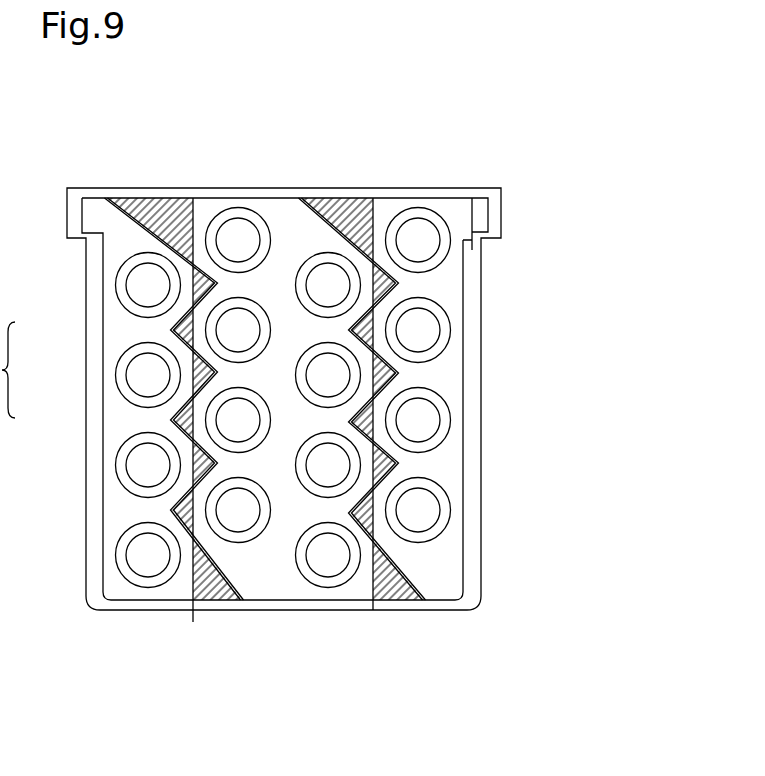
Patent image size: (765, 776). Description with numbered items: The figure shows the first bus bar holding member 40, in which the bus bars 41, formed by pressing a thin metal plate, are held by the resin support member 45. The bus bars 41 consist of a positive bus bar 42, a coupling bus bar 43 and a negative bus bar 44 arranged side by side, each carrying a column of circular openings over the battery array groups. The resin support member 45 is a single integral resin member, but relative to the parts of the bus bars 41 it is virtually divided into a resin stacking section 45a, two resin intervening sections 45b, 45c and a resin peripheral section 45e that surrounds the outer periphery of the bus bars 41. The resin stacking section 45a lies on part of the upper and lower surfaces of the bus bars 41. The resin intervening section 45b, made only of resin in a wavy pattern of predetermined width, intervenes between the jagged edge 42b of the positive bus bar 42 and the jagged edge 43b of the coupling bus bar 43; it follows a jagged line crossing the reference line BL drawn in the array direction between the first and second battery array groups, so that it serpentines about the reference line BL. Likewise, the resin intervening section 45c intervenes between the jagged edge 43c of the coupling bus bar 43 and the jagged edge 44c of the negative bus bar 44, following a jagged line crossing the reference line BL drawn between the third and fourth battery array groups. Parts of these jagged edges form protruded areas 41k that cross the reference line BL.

The first bus bar holding member 40 is at (567, 123).
The bus bars 41 is at (285, 399).
The protruded areas 41k is at (172, 510).
The positive bus bar 42 is at (118, 340).
The jagged edge 42b is at (196, 603).
The coupling bus bar 43 is at (172, 420).
The jagged edge 43b is at (250, 590).
The jagged edge 43c is at (417, 597).
The negative bus bar 44 is at (452, 378).
The jagged edge 44c is at (423, 580).
The resin support member 45 is at (483, 278).
The resin stacking section 45a is at (122, 222).
The resin intervening section 45b is at (158, 213).
The resin intervening section 45c is at (327, 210).
The resin peripheral section 45e is at (475, 205).
The reference line BL is at (193, 200).